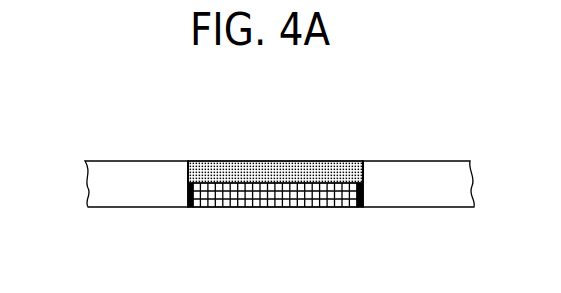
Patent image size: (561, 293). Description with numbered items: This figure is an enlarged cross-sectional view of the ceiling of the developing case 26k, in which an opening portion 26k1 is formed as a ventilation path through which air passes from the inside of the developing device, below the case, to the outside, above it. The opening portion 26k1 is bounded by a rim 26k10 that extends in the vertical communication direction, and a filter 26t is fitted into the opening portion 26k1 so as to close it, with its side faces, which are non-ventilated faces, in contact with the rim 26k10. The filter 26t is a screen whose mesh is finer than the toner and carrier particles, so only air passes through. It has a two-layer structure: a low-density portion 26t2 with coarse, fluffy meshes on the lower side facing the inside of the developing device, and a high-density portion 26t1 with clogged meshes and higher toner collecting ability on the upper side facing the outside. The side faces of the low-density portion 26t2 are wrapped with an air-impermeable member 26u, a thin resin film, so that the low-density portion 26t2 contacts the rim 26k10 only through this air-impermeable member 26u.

The developing case 26k is at (100, 160).
The rim 26k10 is at (196, 163).
The opening portion 26k1 is at (276, 140).
The filter 26t is at (249, 161).
The high-density portion 26t1 is at (290, 161).
The low-density portion 26t2 is at (273, 207).
The air-impermeable member 26u is at (195, 203).